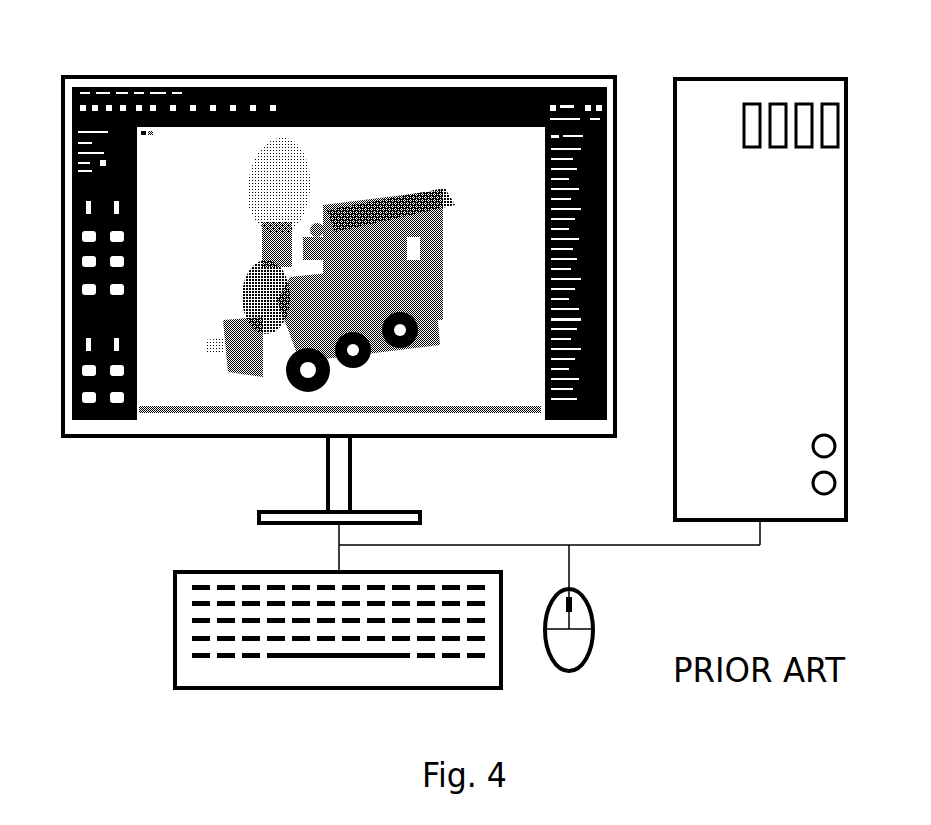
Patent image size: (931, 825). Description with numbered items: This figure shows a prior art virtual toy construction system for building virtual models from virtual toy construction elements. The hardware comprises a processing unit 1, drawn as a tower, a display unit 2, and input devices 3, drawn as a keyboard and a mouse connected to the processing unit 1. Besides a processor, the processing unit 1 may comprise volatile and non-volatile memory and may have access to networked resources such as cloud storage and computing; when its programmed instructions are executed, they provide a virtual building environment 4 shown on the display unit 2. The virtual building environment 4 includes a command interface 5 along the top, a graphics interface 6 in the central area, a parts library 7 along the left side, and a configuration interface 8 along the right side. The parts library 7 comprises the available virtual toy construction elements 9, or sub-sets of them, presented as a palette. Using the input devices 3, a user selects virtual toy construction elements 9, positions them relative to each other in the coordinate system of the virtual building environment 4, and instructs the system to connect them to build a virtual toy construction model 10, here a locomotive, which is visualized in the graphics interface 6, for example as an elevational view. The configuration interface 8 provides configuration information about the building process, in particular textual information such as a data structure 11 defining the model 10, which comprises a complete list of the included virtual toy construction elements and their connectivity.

The processing unit 1 is at (703, 125).
The display unit 2 is at (248, 80).
The input devices 3 is at (196, 637).
The virtual building environment 4 is at (370, 155).
The command interface 5 is at (145, 108).
The graphics interface 6 is at (175, 207).
The parts library 7 is at (105, 255).
The configuration interface 8 is at (578, 292).
The virtual toy construction elements 9 is at (85, 292).
The virtual toy construction model 10 is at (270, 370).
The data structure 11 is at (565, 322).